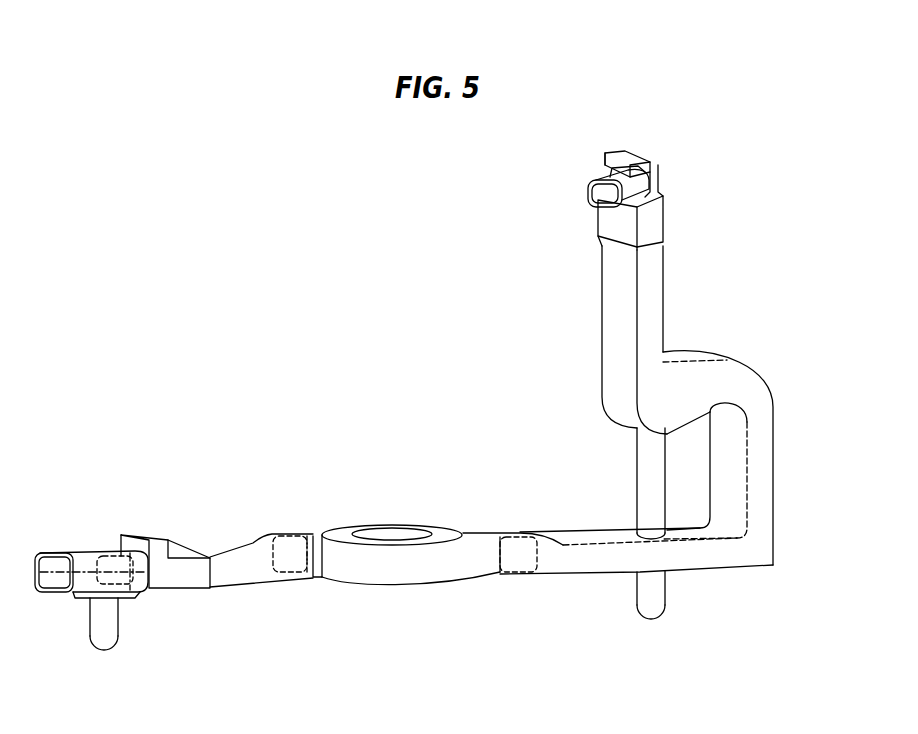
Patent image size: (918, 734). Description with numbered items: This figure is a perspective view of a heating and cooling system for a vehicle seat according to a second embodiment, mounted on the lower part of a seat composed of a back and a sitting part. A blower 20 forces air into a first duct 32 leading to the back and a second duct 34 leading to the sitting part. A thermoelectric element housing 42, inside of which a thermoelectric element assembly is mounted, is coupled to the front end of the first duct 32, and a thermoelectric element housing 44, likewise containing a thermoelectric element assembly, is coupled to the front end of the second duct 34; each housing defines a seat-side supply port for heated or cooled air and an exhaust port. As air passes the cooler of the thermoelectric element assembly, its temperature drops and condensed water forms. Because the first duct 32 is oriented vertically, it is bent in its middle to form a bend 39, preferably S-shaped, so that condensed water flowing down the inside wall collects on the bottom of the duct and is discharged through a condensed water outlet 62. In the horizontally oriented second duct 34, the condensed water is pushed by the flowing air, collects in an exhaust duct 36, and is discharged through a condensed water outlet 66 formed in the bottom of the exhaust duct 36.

The blower 20 is at (388, 528).
The first duct 32 is at (763, 467).
The second duct 34 is at (253, 568).
The exhaust duct 36 is at (85, 552).
The bend 39 is at (627, 410).
The thermoelectric element housing 42 is at (676, 191).
The thermoelectric element housing 44 is at (187, 536).
The condensed water outlet 62 is at (658, 592).
The condensed water outlet 66 is at (113, 627).